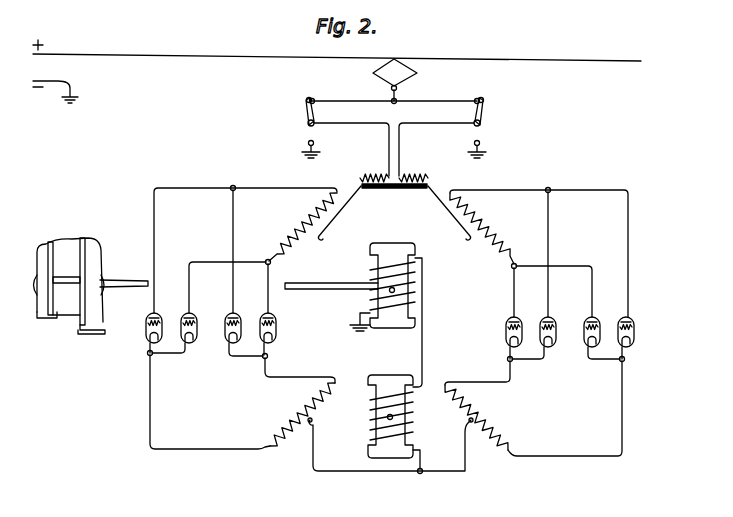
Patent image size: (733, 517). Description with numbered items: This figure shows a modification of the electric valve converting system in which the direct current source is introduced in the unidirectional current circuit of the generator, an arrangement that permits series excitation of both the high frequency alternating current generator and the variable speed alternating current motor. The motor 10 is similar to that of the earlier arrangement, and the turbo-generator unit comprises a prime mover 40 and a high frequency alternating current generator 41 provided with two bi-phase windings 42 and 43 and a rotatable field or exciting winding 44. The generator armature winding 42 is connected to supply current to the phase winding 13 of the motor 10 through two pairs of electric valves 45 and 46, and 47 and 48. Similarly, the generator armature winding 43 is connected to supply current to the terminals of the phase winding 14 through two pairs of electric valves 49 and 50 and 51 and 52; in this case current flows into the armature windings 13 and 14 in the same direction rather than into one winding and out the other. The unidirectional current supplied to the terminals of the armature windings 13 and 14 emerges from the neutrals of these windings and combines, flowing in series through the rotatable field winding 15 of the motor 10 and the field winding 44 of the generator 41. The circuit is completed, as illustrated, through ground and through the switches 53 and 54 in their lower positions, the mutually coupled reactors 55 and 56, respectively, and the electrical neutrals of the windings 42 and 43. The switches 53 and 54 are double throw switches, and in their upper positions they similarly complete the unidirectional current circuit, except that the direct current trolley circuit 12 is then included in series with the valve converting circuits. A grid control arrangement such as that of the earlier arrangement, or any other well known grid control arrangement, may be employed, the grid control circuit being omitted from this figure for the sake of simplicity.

The motor 10 is at (396, 497).
The direct current trolley circuit 12 is at (62, 56).
The phase winding 13 is at (291, 419).
The phase winding 14 is at (480, 421).
The rotatable field winding 15 is at (370, 425).
The prime mover 40 is at (99, 255).
The high frequency alternating current generator 41 is at (396, 222).
The bi-phase winding 42 is at (292, 234).
The bi-phase winding 43 is at (488, 227).
The rotatable field winding 44 is at (374, 277).
The electric valve 45 is at (148, 318).
The electric valve 46 is at (185, 313).
The electric valve 47 is at (229, 318).
The electric valve 48 is at (263, 315).
The electric valve 49 is at (506, 322).
The electric valve 50 is at (543, 318).
The electric valve 51 is at (586, 322).
The electric valve 52 is at (622, 318).
The double throw switch 53 is at (305, 122).
The double throw switch 54 is at (486, 122).
The mutually coupled reactor 55 is at (375, 170).
The mutually coupled reactor 56 is at (418, 170).